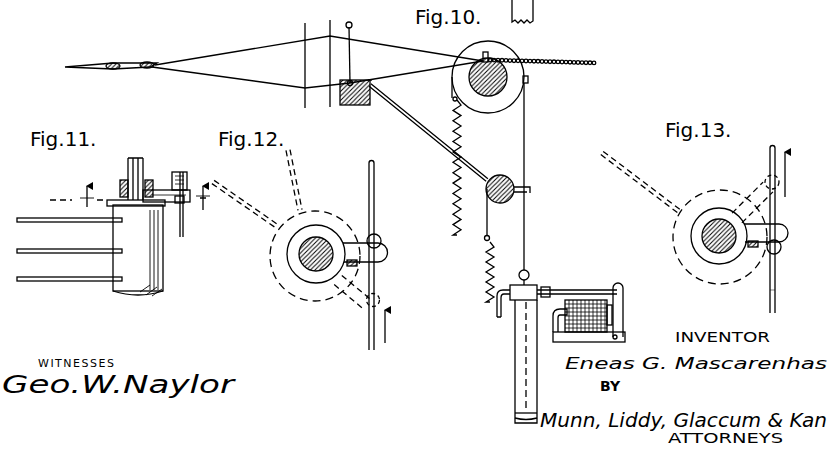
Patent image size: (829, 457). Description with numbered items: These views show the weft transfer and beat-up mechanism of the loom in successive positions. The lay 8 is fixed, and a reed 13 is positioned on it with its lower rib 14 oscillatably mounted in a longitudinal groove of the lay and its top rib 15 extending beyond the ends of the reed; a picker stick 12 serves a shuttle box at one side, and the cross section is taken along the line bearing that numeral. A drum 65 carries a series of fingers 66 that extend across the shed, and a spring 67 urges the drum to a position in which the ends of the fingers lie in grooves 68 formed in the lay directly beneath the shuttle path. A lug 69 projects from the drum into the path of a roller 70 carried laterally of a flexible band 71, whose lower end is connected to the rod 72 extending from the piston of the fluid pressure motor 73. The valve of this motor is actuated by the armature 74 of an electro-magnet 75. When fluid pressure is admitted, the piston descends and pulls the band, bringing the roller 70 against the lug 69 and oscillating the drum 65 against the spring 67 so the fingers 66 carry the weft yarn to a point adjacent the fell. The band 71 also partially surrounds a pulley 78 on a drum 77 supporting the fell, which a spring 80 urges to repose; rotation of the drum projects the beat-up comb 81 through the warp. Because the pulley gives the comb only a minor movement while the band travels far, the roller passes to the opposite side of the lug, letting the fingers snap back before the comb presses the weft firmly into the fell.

In FIG. 10, the lay 8 is at (367, 106).
In FIG. 11, the picker stick 12 is at (139, 202).
In FIG. 10, the reed 13 is at (352, 47).
In FIG. 10, the lower rib 14 is at (352, 81).
In FIG. 10, the top rib 15 is at (351, 26).
In FIG. 10, the drum 65 is at (499, 176).
In FIG. 11, the drum 65 is at (163, 269).
In FIG. 12, the drum 65 is at (321, 240).
In FIG. 13, the drum 65 is at (717, 222).
In FIG. 10, the fingers 66 is at (418, 127).
In FIG. 11, the fingers 66 is at (79, 278).
In FIG. 12, the fingers 66 is at (289, 180).
In FIG. 13, the fingers 66 is at (650, 193).
In FIG. 10, the spring 67 is at (486, 273).
In FIG. 10, the grooves 68 is at (371, 83).
In FIG. 10, the lug 69 is at (531, 187).
In FIG. 11, the lug 69 is at (186, 204).
In FIG. 12, the lug 69 is at (383, 255).
In FIG. 13, the lug 69 is at (784, 230).
In FIG. 10, the roller 70 is at (529, 273).
In FIG. 11, the roller 70 is at (179, 207).
In FIG. 12, the roller 70 is at (381, 240).
In FIG. 13, the roller 70 is at (781, 250).
In FIG. 10, the flexible band 71 is at (526, 146).
In FIG. 11, the flexible band 71 is at (180, 171).
In FIG. 12, the flexible band 71 is at (384, 255).
In FIG. 13, the flexible band 71 is at (777, 146).
In FIG. 12, the rod 72 is at (368, 334).
In FIG. 13, the rod 72 is at (776, 293).
In FIG. 10, the fluid pressure motor 73 is at (535, 10).
In FIG. 10, the armature 74 is at (623, 303).
In FIG. 10, the electro-magnet 75 is at (585, 299).
In FIG. 10, the drum 77 is at (501, 74).
In FIG. 10, the pulley 78 is at (497, 106).
In FIG. 10, the spring 80 is at (453, 190).
In FIG. 10, the beat-up comb 81 is at (490, 58).